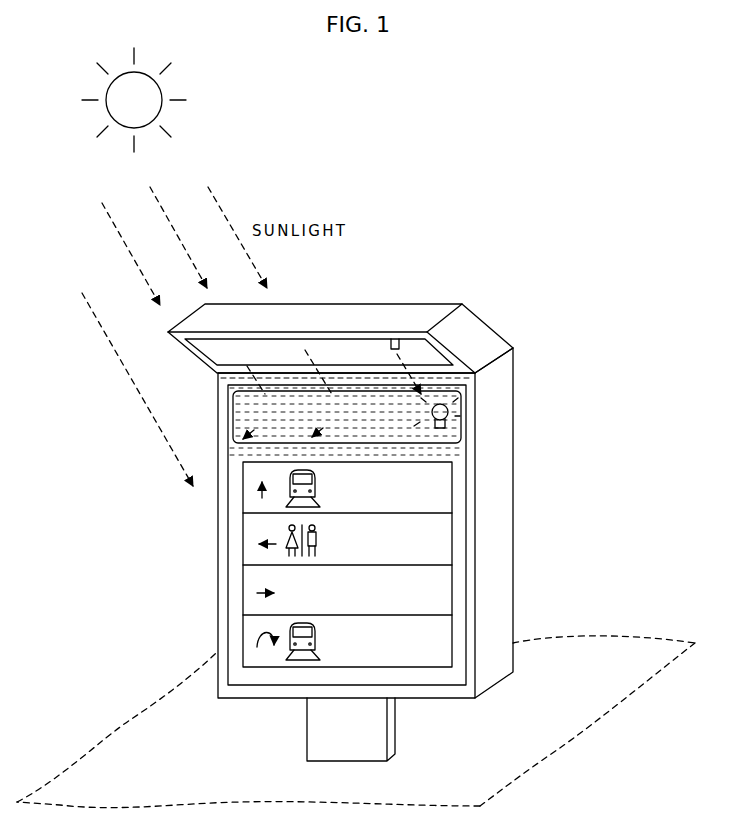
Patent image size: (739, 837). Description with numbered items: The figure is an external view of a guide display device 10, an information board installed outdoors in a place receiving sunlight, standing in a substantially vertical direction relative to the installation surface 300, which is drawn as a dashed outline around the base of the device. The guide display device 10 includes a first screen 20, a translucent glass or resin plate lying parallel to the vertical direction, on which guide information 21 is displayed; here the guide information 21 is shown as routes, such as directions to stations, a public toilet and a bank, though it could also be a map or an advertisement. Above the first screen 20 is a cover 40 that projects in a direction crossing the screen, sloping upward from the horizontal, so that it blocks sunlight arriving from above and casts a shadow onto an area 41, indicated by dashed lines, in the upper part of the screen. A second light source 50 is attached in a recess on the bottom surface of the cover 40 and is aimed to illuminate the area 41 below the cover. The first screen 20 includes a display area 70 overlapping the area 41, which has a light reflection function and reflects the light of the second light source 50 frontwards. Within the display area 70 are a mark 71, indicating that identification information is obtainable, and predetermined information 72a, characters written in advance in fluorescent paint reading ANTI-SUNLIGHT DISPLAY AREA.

The guide display device 10 is at (516, 319).
The first screen 20 is at (468, 513).
The guide information 21 is at (452, 545).
The cover 40 is at (415, 325).
The area 41 is at (218, 392).
The second light source 50 is at (400, 350).
The display area 70 is at (452, 391).
The mark 71 is at (450, 428).
The predetermined information 72a is at (405, 430).
The installation surface 300 is at (557, 702).